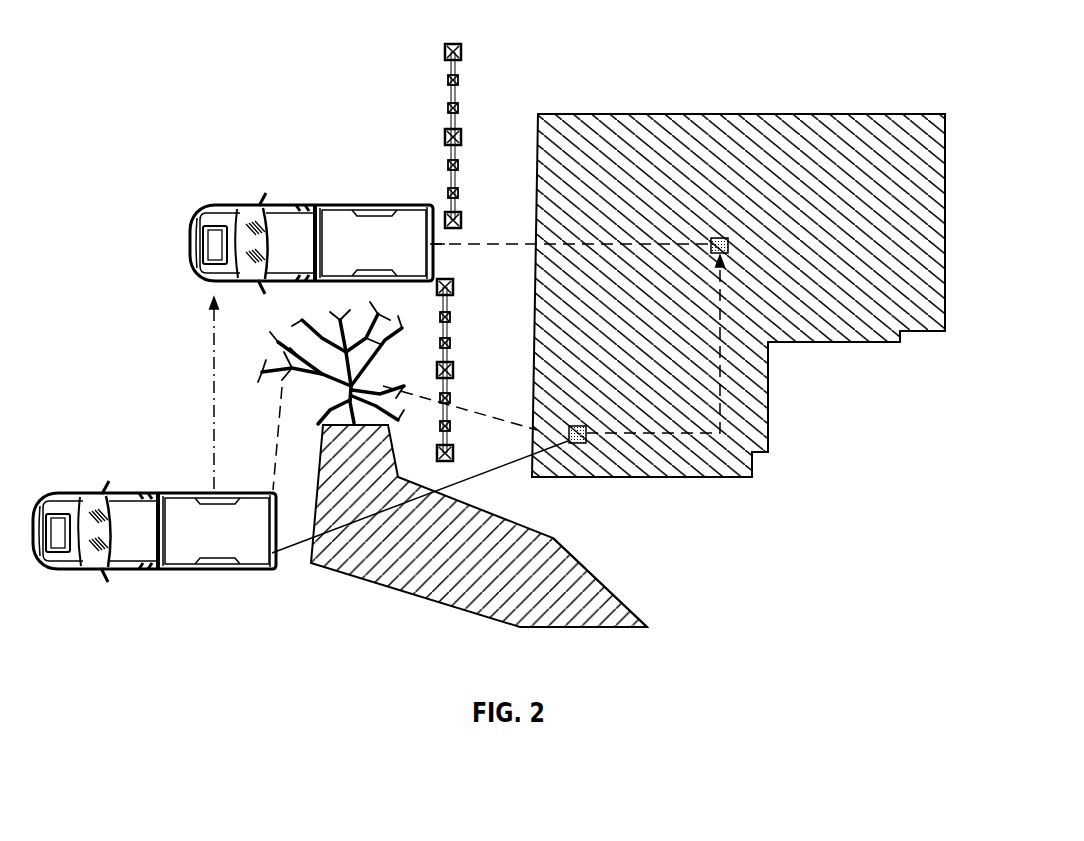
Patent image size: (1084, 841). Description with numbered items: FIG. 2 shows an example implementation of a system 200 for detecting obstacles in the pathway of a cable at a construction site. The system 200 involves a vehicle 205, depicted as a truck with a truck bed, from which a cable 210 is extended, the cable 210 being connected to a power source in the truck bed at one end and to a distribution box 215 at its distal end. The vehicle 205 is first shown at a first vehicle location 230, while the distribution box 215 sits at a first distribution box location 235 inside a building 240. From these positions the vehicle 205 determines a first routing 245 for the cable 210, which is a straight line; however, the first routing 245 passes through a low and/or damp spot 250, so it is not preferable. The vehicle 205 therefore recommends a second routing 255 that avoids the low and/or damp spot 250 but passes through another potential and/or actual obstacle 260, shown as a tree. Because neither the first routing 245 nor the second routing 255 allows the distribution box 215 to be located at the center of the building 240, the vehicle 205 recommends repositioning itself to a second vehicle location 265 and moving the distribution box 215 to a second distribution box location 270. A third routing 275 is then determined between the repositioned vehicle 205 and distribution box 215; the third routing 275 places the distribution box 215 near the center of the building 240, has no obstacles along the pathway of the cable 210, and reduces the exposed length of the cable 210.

The system 200 is at (489, 338).
The vehicle 205 is at (233, 408).
The cable 210 is at (304, 556).
The distribution box 215 is at (580, 445).
The first vehicle location 230 is at (162, 452).
The first distribution box location 235 is at (598, 490).
The building 240 is at (930, 332).
The first routing 245 is at (322, 585).
The low and/or damp spot 250 is at (632, 612).
The second routing 255 is at (268, 410).
The another potential and/or actual obstacle 260 is at (297, 336).
The second vehicle location 265 is at (355, 187).
The second distribution box location 270 is at (681, 222).
The third routing 275 is at (490, 232).